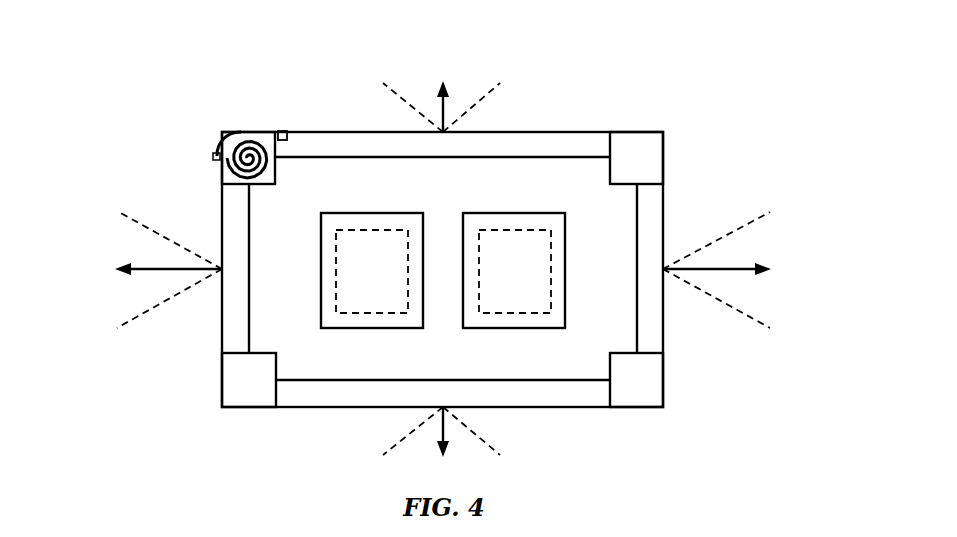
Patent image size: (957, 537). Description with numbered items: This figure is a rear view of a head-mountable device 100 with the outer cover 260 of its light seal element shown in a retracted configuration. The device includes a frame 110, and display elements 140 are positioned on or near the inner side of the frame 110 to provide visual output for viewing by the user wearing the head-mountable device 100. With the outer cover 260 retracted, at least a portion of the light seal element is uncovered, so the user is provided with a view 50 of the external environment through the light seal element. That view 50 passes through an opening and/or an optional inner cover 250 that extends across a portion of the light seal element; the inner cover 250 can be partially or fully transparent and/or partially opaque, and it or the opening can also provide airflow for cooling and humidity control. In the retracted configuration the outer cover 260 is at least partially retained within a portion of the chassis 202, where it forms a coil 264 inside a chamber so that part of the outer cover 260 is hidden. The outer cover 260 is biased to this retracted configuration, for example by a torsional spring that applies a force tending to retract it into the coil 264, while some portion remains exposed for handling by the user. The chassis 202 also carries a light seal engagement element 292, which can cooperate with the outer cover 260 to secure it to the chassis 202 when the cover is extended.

The head-mountable device 100 is at (128, 45).
The frame 110 is at (588, 178).
The display elements 140 is at (372, 212).
The inner cover 250 is at (443, 147).
The outer cover 260 is at (214, 157).
The coil 264 is at (276, 165).
The chassis 202 is at (260, 185).
The light seal engagement element 292 is at (283, 129).
The view 50 is at (467, 110).